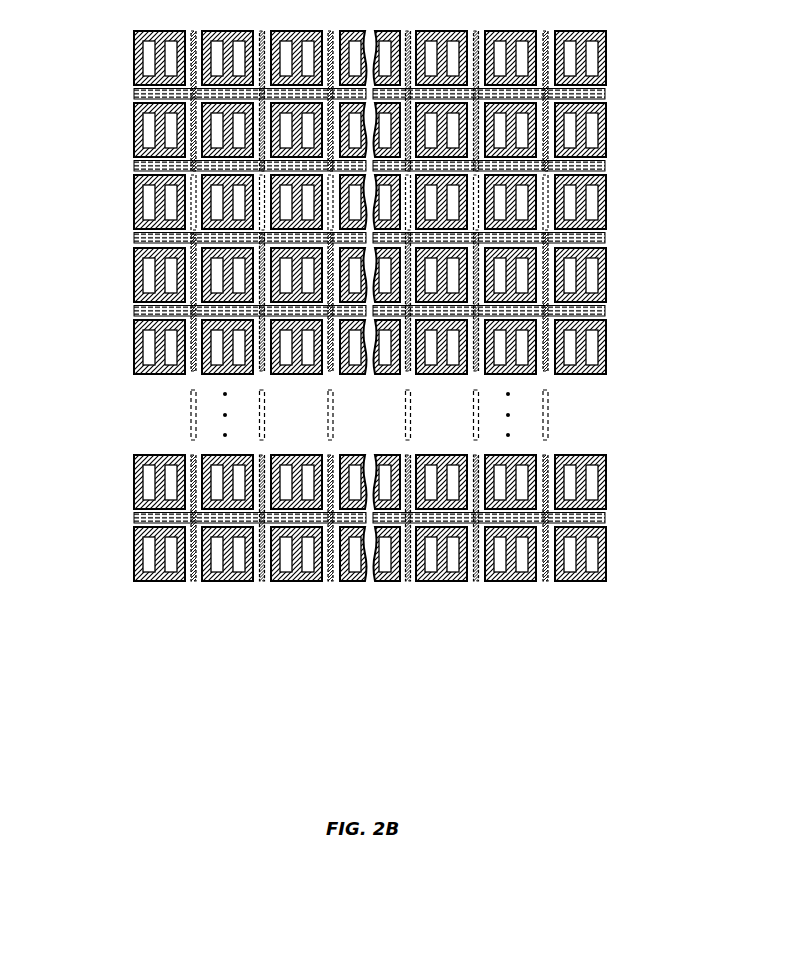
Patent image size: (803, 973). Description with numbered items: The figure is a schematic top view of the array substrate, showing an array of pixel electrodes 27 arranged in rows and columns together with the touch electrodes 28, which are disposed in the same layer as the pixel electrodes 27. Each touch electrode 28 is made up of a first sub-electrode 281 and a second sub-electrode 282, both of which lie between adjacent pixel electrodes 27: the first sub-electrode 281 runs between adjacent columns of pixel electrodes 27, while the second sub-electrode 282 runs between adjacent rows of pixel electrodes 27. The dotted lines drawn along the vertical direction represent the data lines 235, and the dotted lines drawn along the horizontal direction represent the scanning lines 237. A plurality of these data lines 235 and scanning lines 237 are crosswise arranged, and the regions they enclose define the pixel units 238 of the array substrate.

The pixel electrode 27 is at (130, 146).
The touch electrode 28 is at (369, 306).
The first sub-electrode 281 is at (185, 48).
The second sub-electrode 282 is at (130, 85).
The data line 235 is at (185, 192).
The scanning line 237 is at (135, 301).
The pixel unit 238 is at (185, 272).